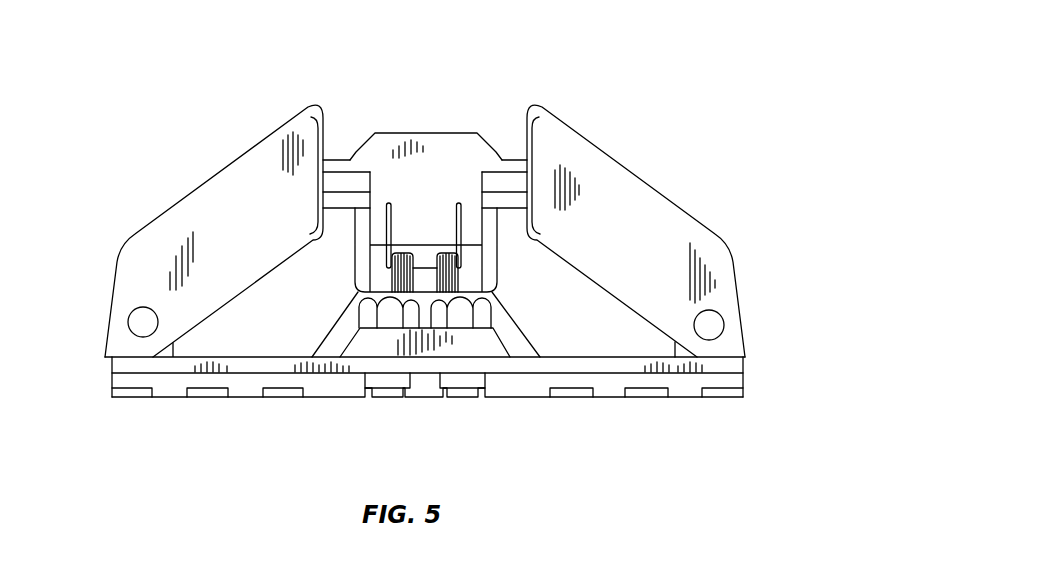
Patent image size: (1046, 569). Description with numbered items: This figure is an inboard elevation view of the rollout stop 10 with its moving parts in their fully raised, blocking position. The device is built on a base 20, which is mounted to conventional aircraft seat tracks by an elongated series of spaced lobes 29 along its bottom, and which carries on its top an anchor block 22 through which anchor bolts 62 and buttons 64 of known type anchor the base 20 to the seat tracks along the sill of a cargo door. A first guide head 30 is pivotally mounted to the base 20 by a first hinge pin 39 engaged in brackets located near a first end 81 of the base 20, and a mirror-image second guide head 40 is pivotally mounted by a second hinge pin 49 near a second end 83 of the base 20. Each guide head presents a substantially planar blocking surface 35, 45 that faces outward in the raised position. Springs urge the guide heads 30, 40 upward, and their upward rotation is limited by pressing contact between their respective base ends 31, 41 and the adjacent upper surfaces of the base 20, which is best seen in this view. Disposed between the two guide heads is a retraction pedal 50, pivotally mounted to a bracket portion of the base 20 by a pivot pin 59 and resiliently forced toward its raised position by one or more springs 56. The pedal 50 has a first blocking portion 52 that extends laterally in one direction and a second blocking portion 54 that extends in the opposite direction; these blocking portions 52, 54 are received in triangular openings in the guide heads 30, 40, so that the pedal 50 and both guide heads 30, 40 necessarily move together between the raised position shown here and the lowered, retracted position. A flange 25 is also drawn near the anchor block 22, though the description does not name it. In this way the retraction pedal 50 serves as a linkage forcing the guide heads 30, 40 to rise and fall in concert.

The rollout stop 10 is at (668, 78).
The base 20 is at (743, 380).
The anchor block 22 is at (480, 342).
The flange 25 is at (337, 330).
The spaced lobes 29 is at (605, 397).
The first guide head 30 is at (686, 218).
The base end of first guide head 31 is at (723, 362).
The blocking surface 35 is at (607, 248).
The first hinge pin 39 is at (712, 325).
The second guide head 40 is at (200, 186).
The base end of second guide head 41 is at (128, 360).
The blocking surface 45 is at (215, 248).
The second hinge pin 49 is at (143, 321).
The retraction pedal 50 is at (418, 132).
The first blocking portion 52 is at (508, 158).
The second blocking portion 54 is at (343, 158).
The springs 56 is at (405, 265).
The pivot pin 59 is at (423, 277).
The anchor bolts 62 is at (487, 312).
The buttons 64 is at (389, 389).
The first end of base 81 is at (743, 393).
The second end of base 83 is at (112, 380).